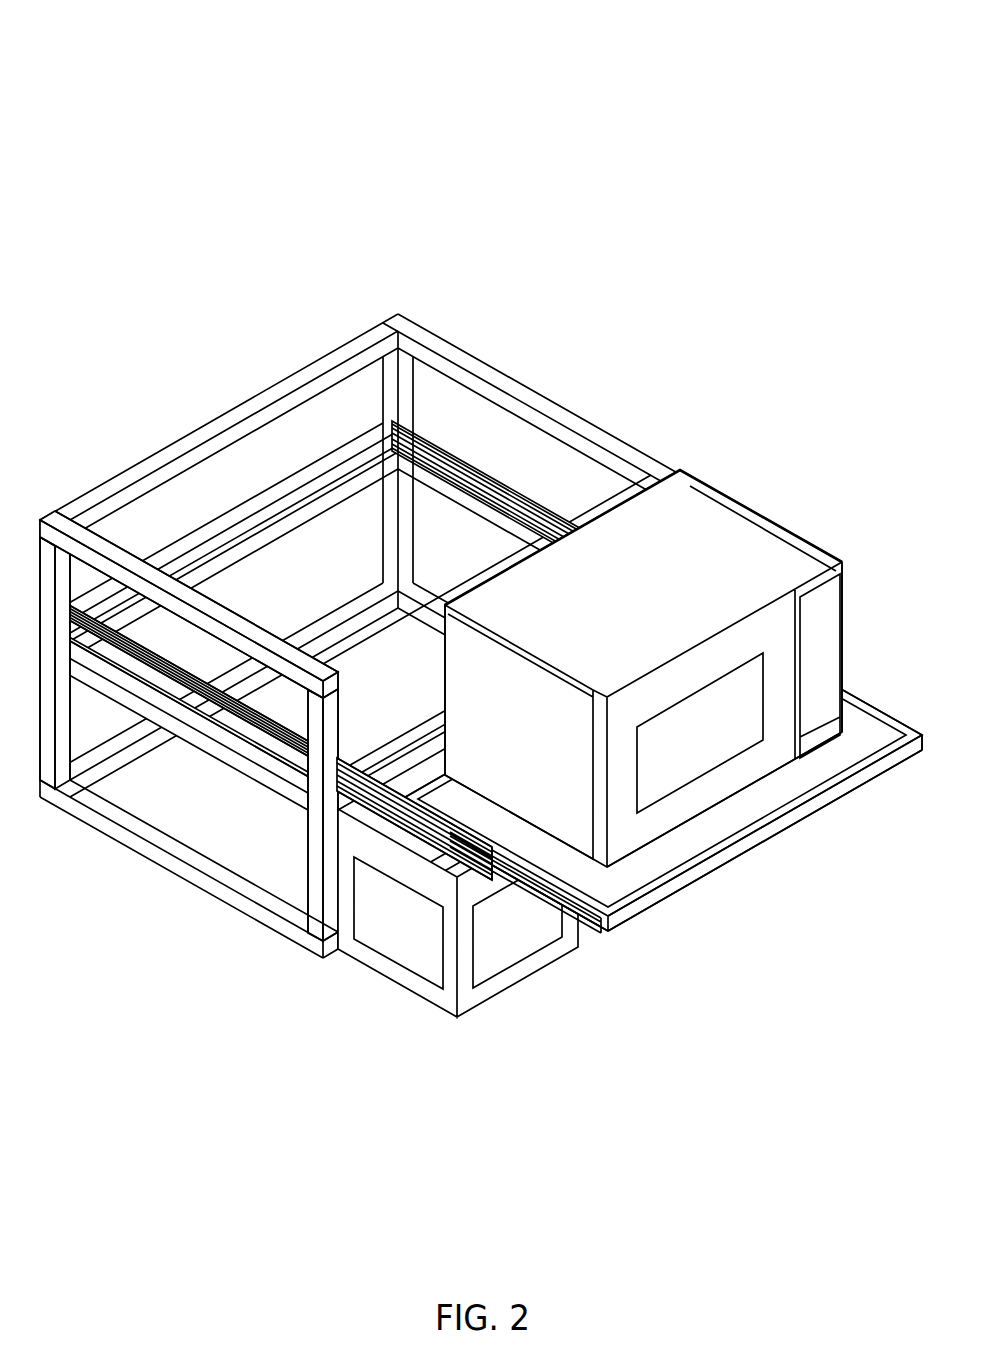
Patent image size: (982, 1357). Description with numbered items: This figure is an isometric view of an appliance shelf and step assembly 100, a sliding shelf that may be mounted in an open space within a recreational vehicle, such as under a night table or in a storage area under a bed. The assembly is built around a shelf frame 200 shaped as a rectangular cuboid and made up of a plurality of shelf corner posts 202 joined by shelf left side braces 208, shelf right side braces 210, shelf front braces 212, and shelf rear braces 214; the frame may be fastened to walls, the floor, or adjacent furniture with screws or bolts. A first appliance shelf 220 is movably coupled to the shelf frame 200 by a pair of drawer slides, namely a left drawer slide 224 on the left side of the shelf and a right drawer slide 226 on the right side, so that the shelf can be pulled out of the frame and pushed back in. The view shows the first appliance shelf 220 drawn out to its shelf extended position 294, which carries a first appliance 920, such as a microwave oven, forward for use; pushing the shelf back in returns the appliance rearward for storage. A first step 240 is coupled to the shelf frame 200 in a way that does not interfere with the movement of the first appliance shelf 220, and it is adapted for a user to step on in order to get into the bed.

The appliance shelf and step assembly 100 is at (113, 187).
The shelf frame 200 is at (322, 358).
The shelf corner posts 202 is at (388, 526).
The shelf left side braces 208 is at (120, 627).
The shelf right side braces 210 is at (580, 422).
The shelf front braces 212 is at (383, 760).
The shelf rear braces 214 is at (253, 497).
The first appliance shelf 220 is at (670, 860).
The left drawer slide 224 is at (535, 888).
The right drawer slide 226 is at (452, 468).
The first step 240 is at (455, 1017).
The shelf extended position 294 is at (819, 828).
The first appliance 920 is at (755, 535).